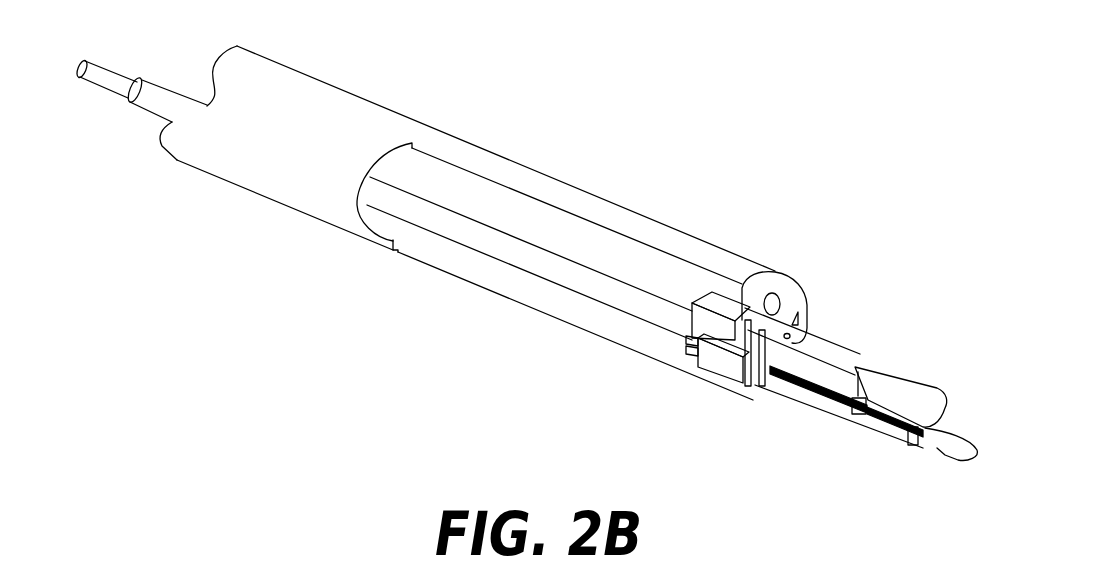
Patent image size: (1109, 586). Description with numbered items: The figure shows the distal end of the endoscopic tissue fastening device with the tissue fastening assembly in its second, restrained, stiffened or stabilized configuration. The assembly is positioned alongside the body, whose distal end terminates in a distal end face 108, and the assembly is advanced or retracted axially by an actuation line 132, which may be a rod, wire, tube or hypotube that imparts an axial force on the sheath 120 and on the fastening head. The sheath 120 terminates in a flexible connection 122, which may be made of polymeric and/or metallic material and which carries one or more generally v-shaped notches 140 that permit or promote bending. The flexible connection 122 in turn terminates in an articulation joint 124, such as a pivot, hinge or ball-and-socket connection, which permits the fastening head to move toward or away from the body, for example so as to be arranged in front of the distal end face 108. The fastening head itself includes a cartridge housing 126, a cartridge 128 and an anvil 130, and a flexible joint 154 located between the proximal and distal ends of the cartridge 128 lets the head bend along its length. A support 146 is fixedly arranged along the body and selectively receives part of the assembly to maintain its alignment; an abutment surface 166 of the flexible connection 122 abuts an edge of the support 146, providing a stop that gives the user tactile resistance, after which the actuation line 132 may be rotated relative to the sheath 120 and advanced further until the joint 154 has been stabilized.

The actuation line 132 is at (101, 78).
The sheath 120 is at (510, 250).
The notches 140 is at (737, 323).
The distal end face 108 is at (787, 288).
The abutment surface 166 is at (688, 342).
The flexible connection 122 is at (687, 352).
The support 146 is at (722, 367).
The articulation joint 124 is at (757, 390).
The flexible joint 154 is at (870, 365).
The cartridge housing 126 is at (883, 437).
The anvil 130 is at (910, 388).
The cartridge 128 is at (947, 457).